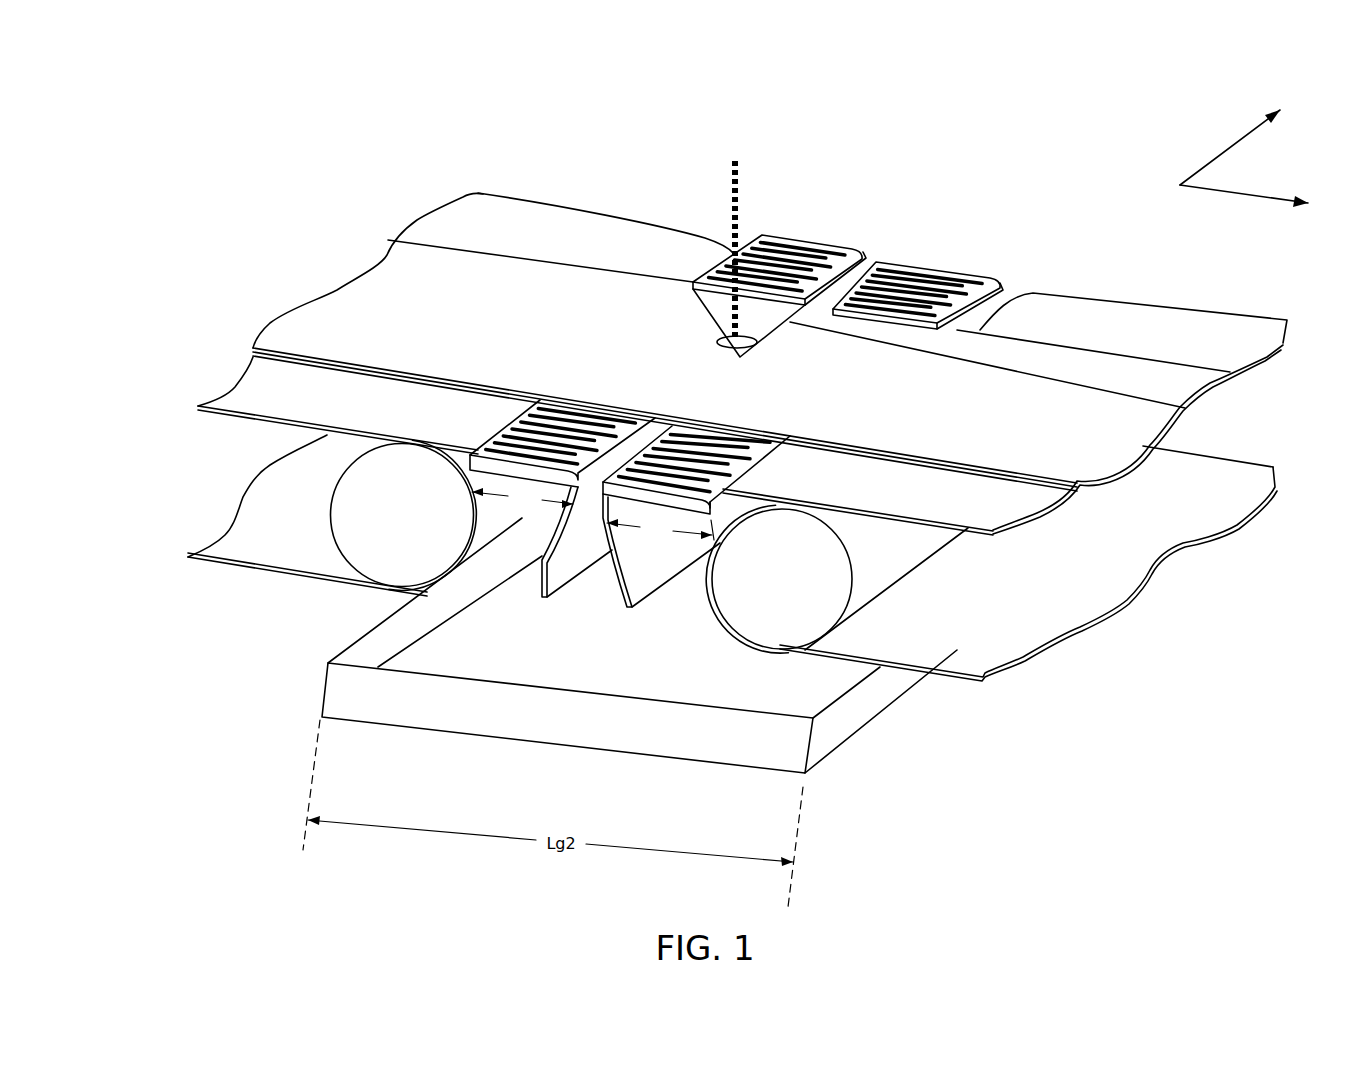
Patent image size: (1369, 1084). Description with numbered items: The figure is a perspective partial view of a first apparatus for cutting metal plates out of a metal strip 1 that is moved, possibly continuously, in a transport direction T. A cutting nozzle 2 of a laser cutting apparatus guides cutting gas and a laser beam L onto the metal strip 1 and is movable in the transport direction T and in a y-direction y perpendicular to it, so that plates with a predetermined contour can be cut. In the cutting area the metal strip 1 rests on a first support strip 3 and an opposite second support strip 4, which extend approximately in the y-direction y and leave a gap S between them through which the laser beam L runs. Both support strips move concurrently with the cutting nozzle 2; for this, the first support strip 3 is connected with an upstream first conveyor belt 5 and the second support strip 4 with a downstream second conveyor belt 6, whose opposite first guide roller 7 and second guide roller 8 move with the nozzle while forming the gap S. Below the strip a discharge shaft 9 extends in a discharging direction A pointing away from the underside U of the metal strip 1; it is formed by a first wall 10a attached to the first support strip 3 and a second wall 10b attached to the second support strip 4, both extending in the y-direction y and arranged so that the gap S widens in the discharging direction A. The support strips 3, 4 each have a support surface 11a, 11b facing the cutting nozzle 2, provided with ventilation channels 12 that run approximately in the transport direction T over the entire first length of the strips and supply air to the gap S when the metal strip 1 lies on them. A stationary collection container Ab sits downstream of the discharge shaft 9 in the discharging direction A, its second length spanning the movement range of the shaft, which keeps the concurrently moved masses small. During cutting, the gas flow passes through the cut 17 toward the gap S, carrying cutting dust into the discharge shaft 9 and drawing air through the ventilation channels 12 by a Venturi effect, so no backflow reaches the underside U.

The metal strip 1 is at (482, 318).
The cutting nozzle 2 is at (718, 340).
The first support strip 3 is at (785, 240).
The second support strip 4 is at (972, 272).
The first conveyor belt 5 is at (587, 530).
The second conveyor belt 6 is at (960, 615).
The first guide roller 7 is at (250, 537).
The second guide roller 8 is at (785, 600).
The discharge shaft 9 is at (600, 592).
The first wall 10a is at (545, 578).
The second wall 10b is at (653, 580).
The support surface 11a is at (560, 418).
The support surface 11b is at (1000, 278).
The ventilation channels 12 is at (367, 507).
The cut 17 is at (1160, 404).
The laser beam L is at (721, 188).
The gap S is at (873, 263).
The underside U is at (813, 443).
The discharging direction A is at (586, 605).
The collection container Ab is at (440, 698).
The transport direction T is at (1244, 205).
The y-direction y is at (1239, 142).